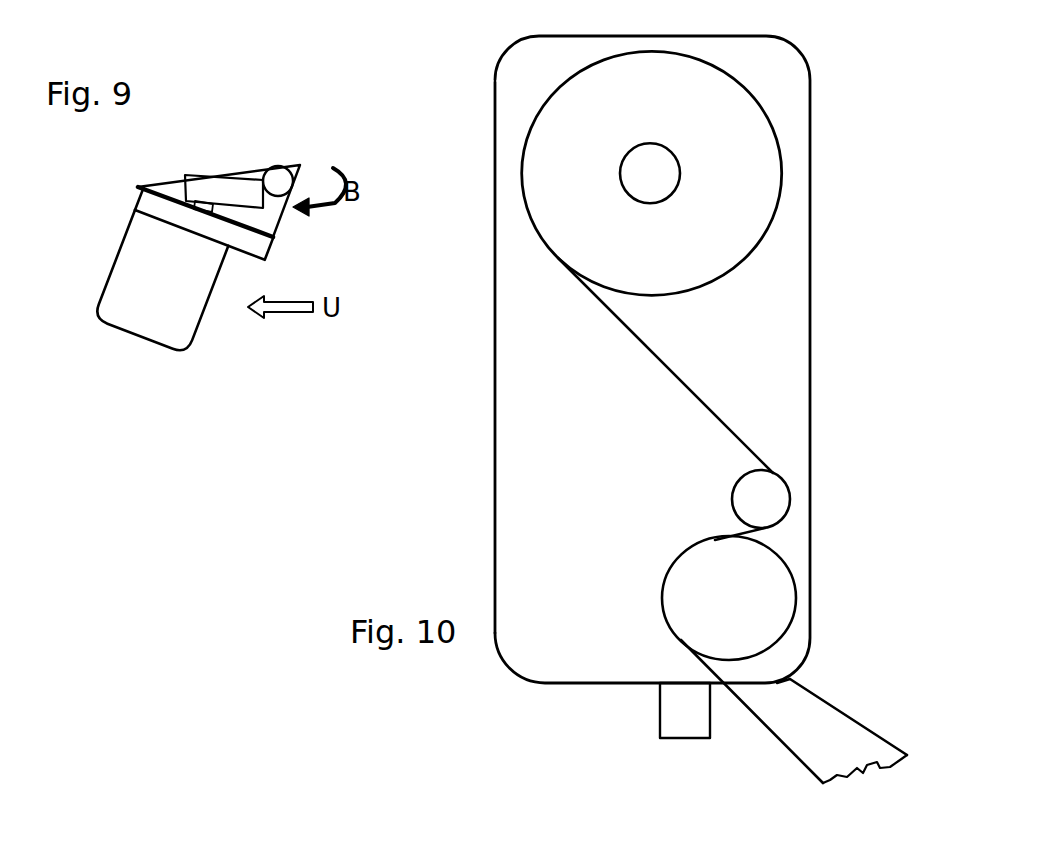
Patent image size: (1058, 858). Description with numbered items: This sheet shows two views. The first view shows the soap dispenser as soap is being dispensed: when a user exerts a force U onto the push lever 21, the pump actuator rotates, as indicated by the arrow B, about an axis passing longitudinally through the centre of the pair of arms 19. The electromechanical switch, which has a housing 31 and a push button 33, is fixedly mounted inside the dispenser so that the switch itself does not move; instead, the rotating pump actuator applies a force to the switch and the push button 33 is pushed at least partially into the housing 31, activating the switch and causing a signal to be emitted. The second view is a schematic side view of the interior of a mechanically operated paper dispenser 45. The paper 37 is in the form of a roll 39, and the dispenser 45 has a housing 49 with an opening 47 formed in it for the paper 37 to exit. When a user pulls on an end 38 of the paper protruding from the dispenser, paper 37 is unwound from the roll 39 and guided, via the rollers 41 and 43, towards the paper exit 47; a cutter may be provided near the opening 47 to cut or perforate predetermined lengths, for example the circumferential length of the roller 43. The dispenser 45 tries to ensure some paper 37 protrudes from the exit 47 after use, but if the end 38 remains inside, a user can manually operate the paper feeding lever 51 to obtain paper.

In FIG. 9, the arms 19 is at (279, 180).
In FIG. 9, the push lever 21 is at (180, 327).
In FIG. 9, the housing 31 is at (199, 188).
In FIG. 9, the push button 33 is at (212, 205).
In FIG. 10, the paper 37 is at (698, 390).
In FIG. 10, the end of the paper 38 is at (869, 760).
In FIG. 10, the roll 39 is at (770, 170).
In FIG. 10, the roller 41 is at (770, 497).
In FIG. 10, the roller 43 is at (777, 592).
In FIG. 10, the paper dispenser 45 is at (812, 61).
In FIG. 10, the opening 47 is at (757, 677).
In FIG. 10, the housing 49 is at (495, 490).
In FIG. 10, the paper feeding lever 51 is at (675, 715).